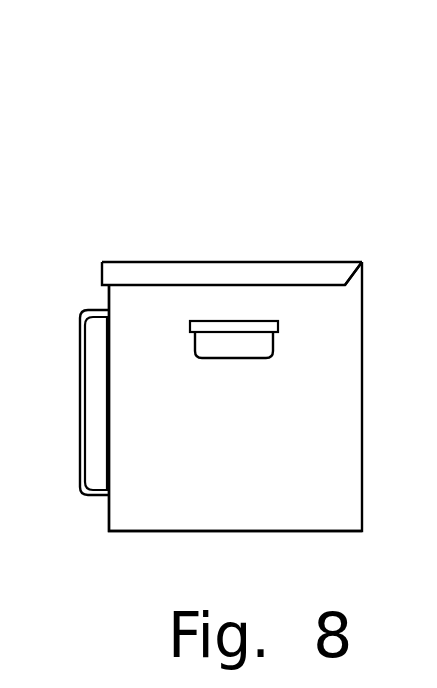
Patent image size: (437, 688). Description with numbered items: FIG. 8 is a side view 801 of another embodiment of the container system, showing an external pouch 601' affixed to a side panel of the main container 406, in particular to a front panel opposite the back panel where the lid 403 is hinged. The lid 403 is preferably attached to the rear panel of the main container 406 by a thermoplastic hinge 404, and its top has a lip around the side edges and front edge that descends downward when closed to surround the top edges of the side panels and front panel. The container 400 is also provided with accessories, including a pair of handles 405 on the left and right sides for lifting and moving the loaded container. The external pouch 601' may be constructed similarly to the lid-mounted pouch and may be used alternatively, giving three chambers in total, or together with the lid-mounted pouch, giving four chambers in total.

The side view 801 is at (250, 57).
The container 400 is at (247, 222).
The lid 403 is at (102, 261).
The thermoplastic hinge 404 is at (362, 262).
The handle 405 is at (242, 362).
The main container 406 is at (257, 487).
The external pouch 601' is at (66, 390).